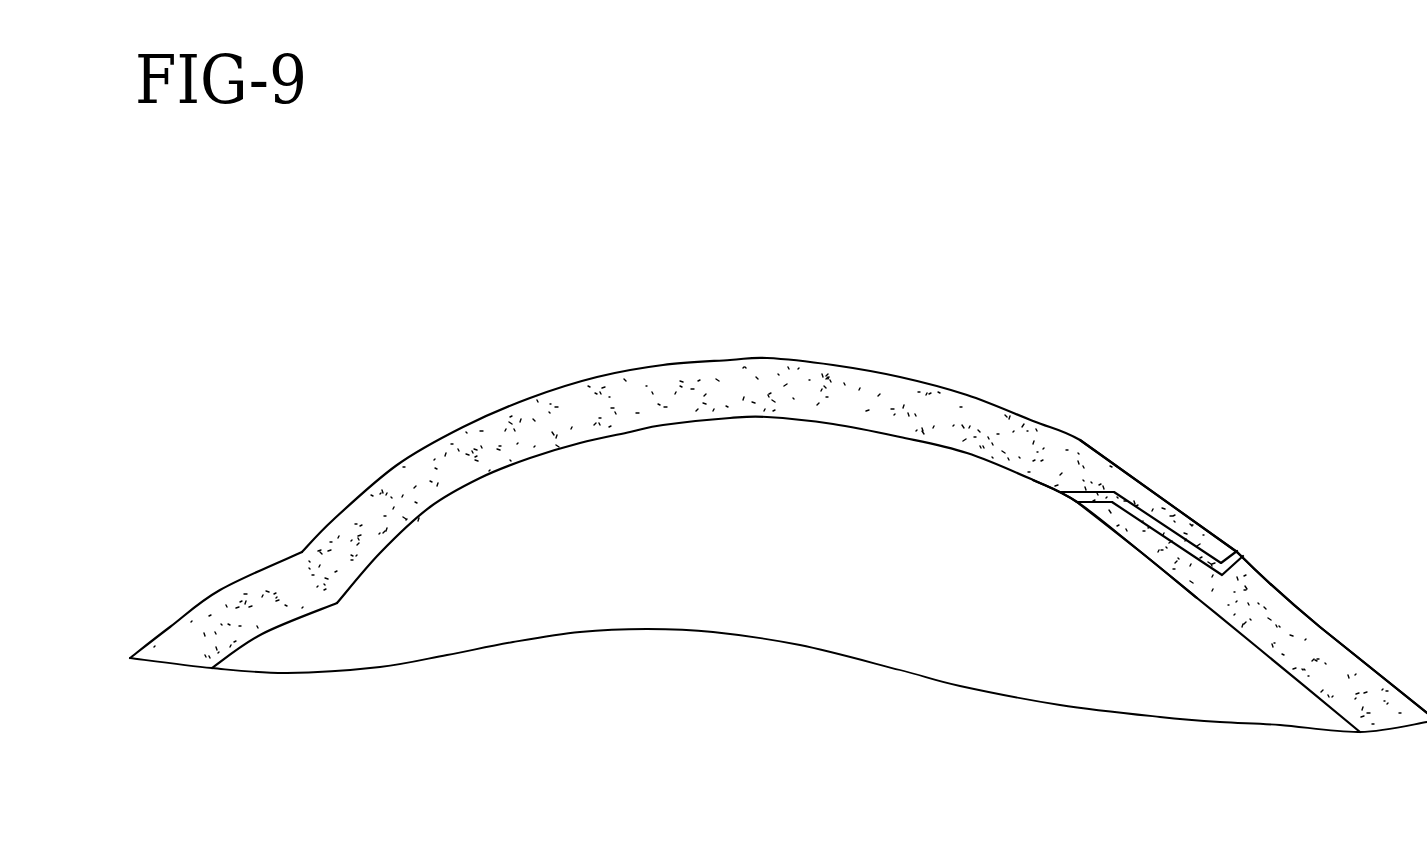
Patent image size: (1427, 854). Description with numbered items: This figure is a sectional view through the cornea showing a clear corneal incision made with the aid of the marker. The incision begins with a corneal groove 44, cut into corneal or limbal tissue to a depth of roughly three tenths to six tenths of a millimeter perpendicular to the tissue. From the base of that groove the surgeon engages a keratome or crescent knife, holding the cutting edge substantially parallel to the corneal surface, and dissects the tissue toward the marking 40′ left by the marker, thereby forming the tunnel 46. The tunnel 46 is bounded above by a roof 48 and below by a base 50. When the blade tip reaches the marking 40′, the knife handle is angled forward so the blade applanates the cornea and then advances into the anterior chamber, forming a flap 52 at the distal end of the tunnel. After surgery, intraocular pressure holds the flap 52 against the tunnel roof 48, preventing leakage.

The marking 40′ is at (1118, 452).
The corneal groove 44 is at (1240, 552).
The tunnel 46 is at (1173, 530).
The roof 48 is at (1150, 493).
The base 50 is at (1145, 538).
The flap 52 is at (1092, 508).